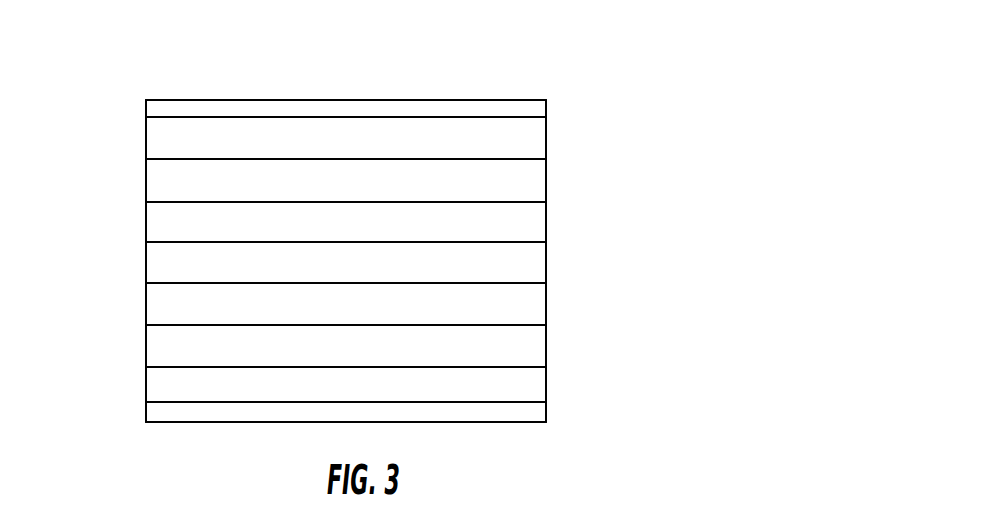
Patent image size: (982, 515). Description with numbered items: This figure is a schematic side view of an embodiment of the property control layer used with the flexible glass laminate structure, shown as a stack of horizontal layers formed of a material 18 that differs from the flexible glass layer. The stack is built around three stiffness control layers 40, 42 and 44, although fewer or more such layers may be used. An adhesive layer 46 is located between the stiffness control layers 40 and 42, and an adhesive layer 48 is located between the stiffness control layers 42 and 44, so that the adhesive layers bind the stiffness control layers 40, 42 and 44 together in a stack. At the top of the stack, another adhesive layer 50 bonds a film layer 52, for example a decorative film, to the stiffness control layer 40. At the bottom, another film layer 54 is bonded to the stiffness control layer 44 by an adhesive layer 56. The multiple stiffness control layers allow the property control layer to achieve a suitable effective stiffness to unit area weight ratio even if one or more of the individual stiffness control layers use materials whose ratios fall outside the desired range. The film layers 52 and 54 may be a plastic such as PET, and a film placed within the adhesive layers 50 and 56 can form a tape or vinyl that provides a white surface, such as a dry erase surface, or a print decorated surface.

The material 18 is at (622, 86).
The film layer 52 is at (323, 108).
The adhesive layer 50 is at (182, 138).
The stiffness control layer 40 is at (525, 187).
The adhesive layer 46 is at (525, 224).
The stiffness control layer 42 is at (182, 263).
The adhesive layer 48 is at (192, 322).
The stiffness control layer 44 is at (513, 342).
The adhesive layer 56 is at (195, 387).
The film layer 54 is at (505, 417).